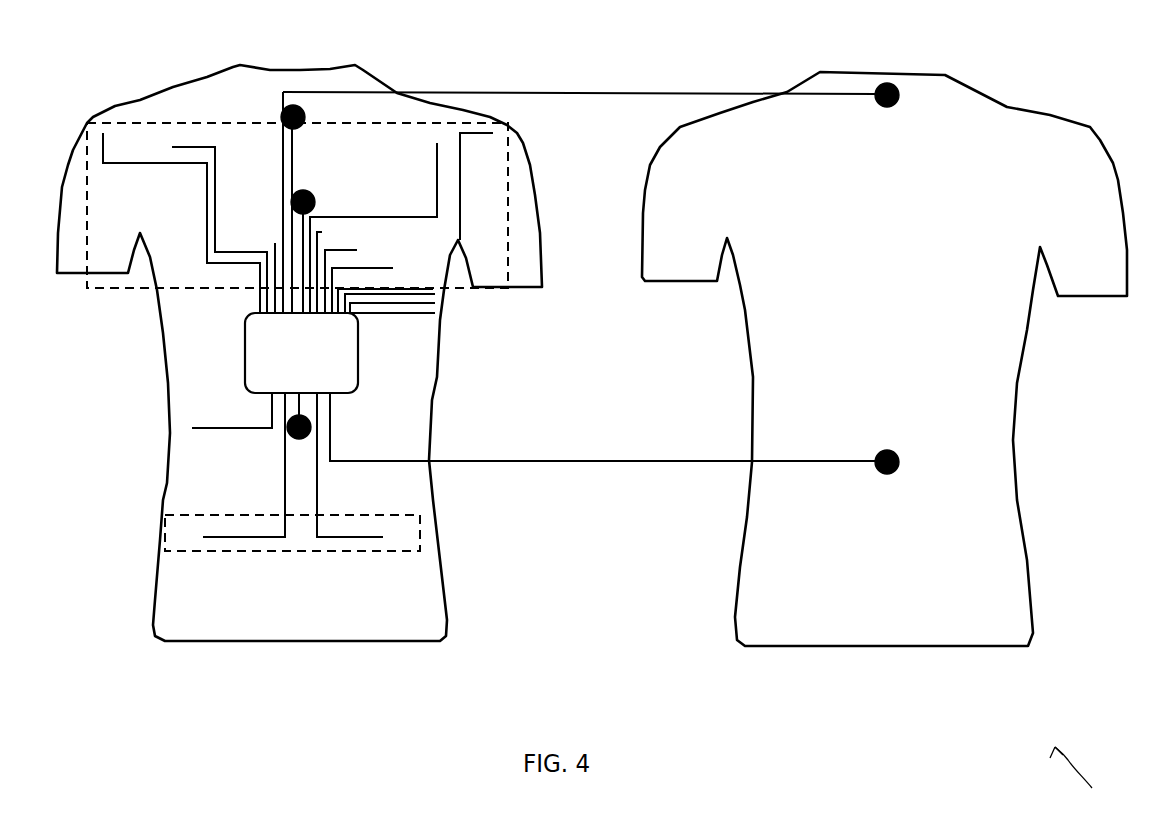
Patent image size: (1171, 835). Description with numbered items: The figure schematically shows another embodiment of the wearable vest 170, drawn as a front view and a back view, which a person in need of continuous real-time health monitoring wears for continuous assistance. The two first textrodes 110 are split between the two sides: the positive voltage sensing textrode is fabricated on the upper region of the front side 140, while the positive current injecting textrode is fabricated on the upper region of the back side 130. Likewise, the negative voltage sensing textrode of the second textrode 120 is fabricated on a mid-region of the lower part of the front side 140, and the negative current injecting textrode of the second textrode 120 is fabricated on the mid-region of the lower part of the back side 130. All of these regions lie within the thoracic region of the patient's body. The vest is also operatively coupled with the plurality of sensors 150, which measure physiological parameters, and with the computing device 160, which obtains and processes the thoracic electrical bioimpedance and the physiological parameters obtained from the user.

The first textrodes 110 is at (291, 108).
The second textrodes 120 is at (316, 428).
The back side 130 is at (1012, 98).
The front side 140 is at (355, 64).
The plurality of sensors 150 is at (142, 122).
The computing device 160 is at (358, 347).
The wearable vest 170 is at (1101, 767).